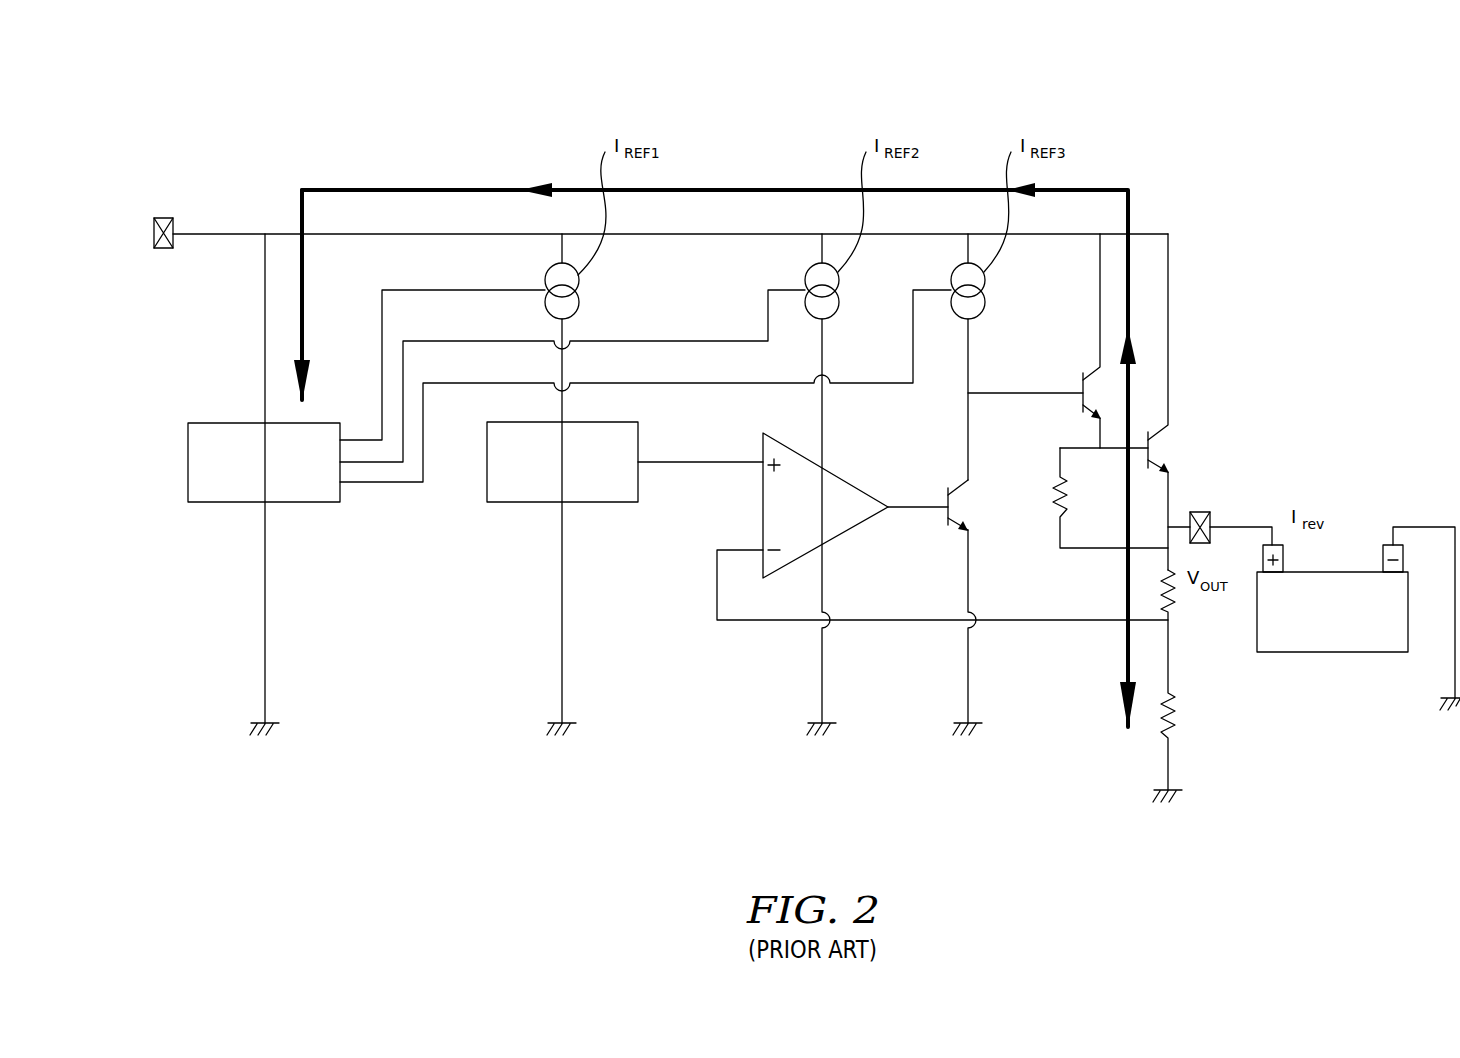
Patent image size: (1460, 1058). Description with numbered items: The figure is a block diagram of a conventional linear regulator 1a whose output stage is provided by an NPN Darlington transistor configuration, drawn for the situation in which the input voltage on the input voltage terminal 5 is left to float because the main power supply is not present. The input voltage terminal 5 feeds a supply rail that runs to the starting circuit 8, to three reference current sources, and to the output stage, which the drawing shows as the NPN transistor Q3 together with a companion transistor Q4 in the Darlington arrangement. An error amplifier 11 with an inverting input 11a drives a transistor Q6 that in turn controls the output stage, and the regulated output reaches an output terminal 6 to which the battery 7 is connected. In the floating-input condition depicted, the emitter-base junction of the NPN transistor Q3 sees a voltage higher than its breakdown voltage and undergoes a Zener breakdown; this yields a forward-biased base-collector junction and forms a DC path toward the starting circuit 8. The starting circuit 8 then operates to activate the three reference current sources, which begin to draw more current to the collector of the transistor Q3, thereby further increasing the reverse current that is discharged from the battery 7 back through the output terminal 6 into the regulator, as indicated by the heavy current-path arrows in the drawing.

The linear regulator 1a is at (280, 123).
The input voltage terminal 5 is at (166, 251).
The output terminal 6 is at (1206, 510).
The battery 7 is at (1337, 652).
The starting circuit 8 is at (200, 506).
The error amplifier 11 is at (835, 540).
The inverting input of error amplifier 11a is at (714, 562).
The NPN transistor Q3 is at (1100, 392).
The transistor Q4 is at (1158, 453).
The transistor Q6 is at (962, 510).